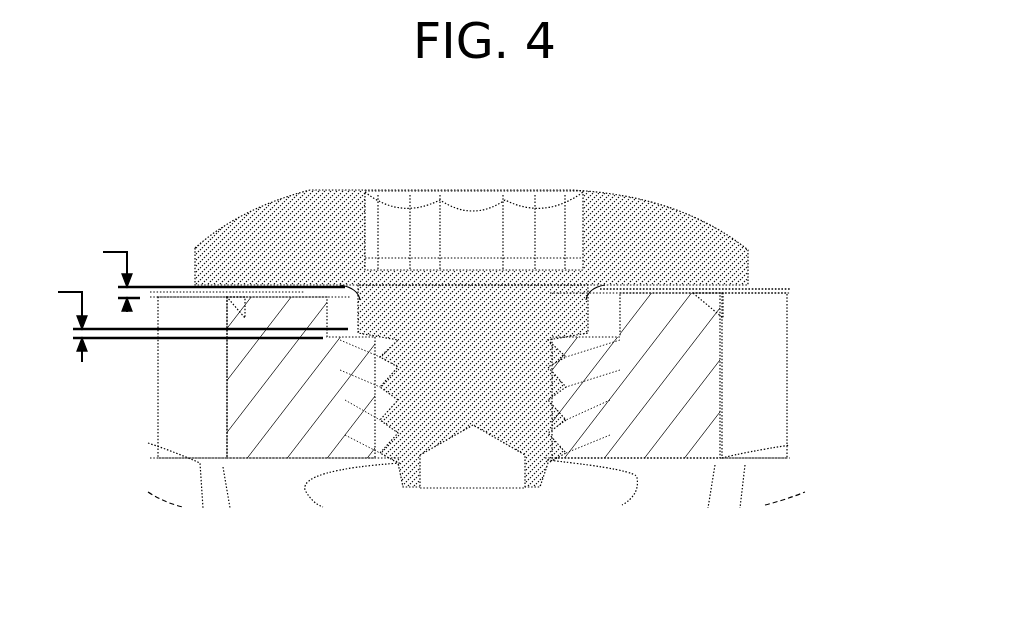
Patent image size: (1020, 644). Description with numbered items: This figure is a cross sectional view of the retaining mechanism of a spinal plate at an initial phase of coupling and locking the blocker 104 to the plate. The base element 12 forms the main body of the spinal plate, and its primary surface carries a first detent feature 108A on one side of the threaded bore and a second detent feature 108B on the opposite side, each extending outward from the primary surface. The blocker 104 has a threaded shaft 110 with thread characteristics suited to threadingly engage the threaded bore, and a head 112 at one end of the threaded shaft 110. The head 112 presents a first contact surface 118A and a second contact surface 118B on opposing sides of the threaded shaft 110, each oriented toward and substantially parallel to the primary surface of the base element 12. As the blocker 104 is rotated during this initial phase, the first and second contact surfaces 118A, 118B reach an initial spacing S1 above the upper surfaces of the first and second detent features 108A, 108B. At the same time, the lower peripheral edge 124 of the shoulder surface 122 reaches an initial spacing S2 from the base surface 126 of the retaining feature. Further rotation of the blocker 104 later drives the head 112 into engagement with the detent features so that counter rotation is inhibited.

The base element 12 is at (613, 437).
The blocker 104 is at (436, 343).
The first detent feature 108A is at (285, 303).
The second detent feature 108B is at (670, 302).
The threaded shaft 110 is at (510, 422).
The head 112 is at (258, 218).
The first contact surface 118A is at (338, 290).
The second contact surface 118B is at (603, 290).
The shoulder surface 122 is at (592, 313).
The lower peripheral edge 124 is at (590, 325).
The base surface 126 is at (380, 342).
The initial spacing S1 is at (98, 272).
The initial spacing S2 is at (53, 318).